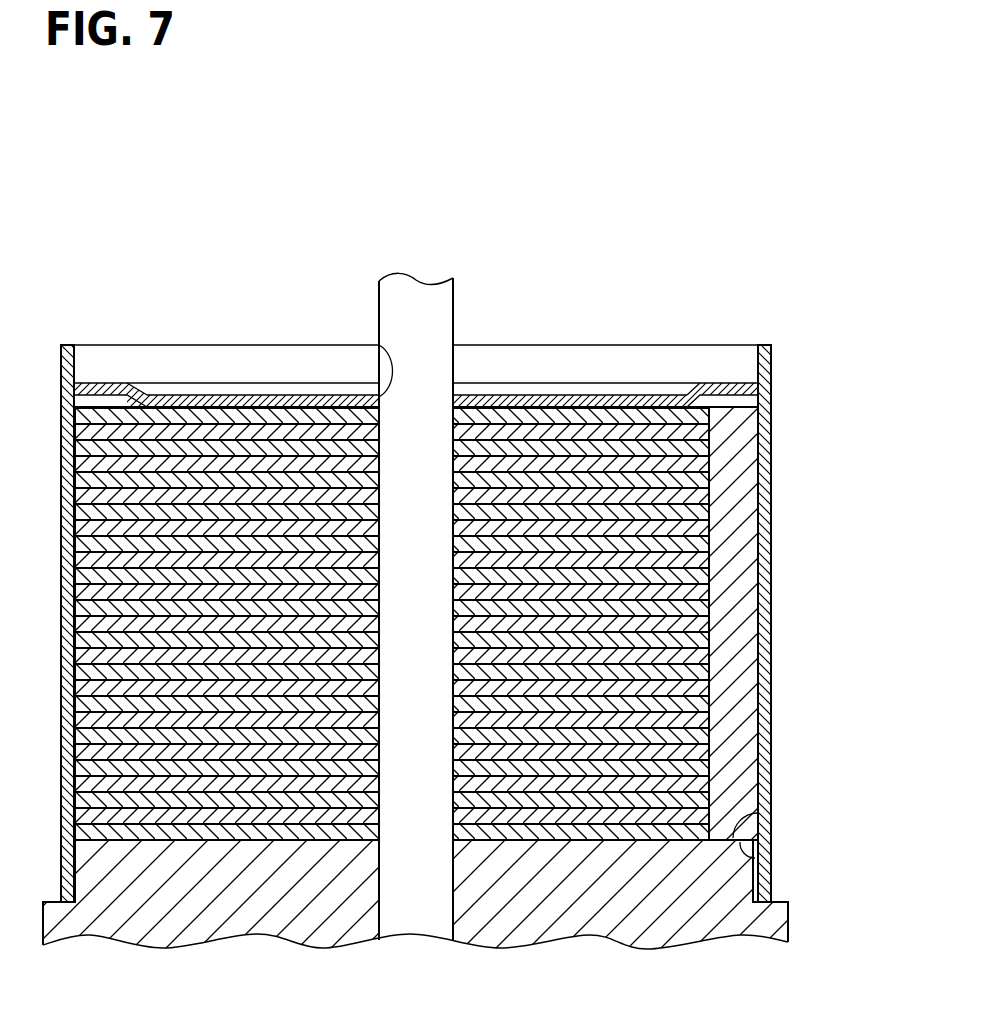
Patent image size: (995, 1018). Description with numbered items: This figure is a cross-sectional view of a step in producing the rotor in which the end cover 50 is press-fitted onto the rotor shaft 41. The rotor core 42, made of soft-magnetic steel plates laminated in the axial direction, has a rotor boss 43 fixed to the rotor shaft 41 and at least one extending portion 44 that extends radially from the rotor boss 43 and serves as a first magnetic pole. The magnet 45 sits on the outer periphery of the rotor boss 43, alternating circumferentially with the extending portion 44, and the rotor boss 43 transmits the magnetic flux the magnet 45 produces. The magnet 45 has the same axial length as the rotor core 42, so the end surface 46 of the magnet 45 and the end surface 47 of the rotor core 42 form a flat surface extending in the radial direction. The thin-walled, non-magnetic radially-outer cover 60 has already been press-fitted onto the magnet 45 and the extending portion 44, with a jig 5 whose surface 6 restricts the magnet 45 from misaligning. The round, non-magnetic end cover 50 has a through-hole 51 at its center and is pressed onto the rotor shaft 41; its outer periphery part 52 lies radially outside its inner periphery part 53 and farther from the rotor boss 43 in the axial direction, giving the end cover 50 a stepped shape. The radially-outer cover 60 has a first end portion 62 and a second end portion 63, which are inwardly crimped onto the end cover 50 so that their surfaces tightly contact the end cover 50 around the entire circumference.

The jig 5 is at (571, 900).
The surface of the jig 6 is at (771, 803).
The rotor shaft 41 is at (421, 290).
The rotor core 42 is at (90, 290).
The rotor boss 43 is at (210, 412).
The extending portion 44 is at (99, 412).
The magnet 45 is at (735, 525).
The end surface of the magnet 46 is at (753, 860).
The end surface of the rotor core 47 is at (640, 845).
The end cover 50 is at (561, 392).
The through-hole 51 is at (379, 345).
The outer periphery part 52 is at (733, 382).
The inner periphery part 53 is at (494, 395).
The radially-outer cover 60 is at (771, 628).
The first end portion 62 is at (771, 360).
The second end portion 63 is at (764, 882).